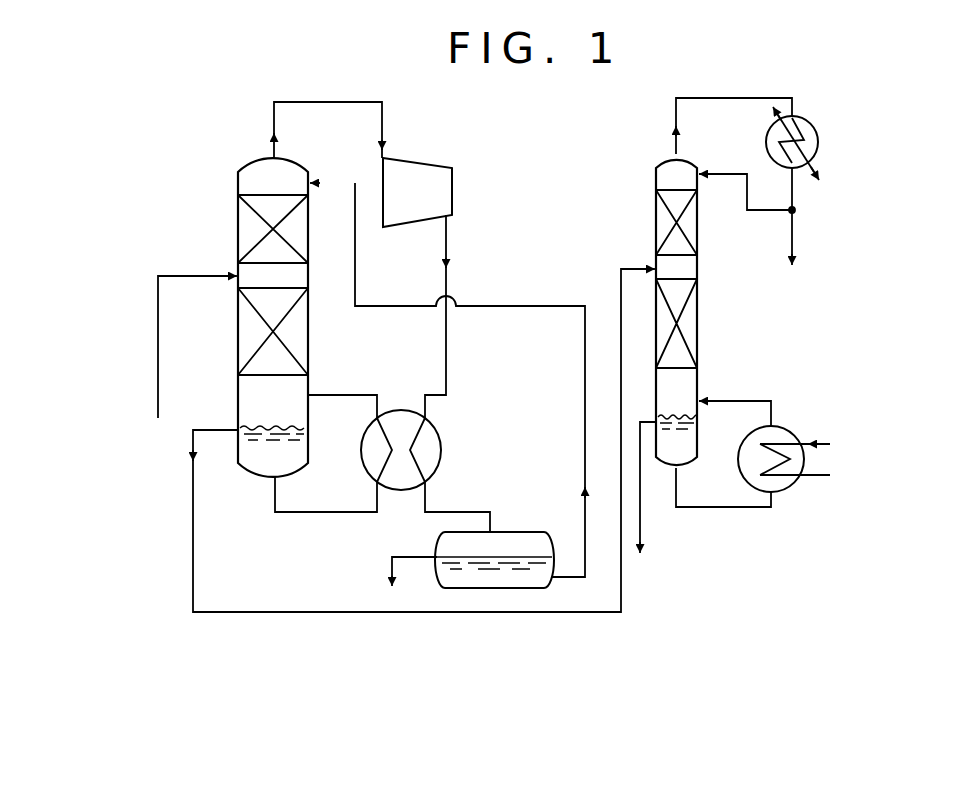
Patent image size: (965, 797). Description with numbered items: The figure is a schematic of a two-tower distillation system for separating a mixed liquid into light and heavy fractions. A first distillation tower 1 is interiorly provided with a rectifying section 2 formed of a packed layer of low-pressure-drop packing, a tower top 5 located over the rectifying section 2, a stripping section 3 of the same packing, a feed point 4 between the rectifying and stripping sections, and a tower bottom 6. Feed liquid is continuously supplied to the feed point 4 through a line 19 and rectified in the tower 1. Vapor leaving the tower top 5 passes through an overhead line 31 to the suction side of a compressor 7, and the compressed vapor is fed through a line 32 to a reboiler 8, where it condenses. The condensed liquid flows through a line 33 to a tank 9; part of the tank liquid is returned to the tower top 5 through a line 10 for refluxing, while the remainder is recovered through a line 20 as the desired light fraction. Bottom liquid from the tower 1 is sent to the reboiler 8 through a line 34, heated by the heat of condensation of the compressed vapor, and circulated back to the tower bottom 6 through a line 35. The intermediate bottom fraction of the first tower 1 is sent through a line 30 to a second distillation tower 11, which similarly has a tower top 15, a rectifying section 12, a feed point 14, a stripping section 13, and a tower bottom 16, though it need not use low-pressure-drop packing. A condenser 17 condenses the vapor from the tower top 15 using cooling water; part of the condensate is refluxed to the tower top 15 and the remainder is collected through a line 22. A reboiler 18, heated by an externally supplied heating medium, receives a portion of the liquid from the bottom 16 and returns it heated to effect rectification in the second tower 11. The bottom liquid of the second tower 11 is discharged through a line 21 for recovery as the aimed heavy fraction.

The first distillation tower 1 is at (221, 208).
The rectifying section 2 is at (243, 228).
The stripping section 3 is at (243, 340).
The feed point 4 is at (240, 283).
The tower top 5 is at (255, 178).
The tower bottom 6 is at (262, 406).
The compressor 7 is at (437, 168).
The reboiler 8 is at (440, 438).
The tank 9 is at (508, 540).
The line 10 is at (527, 306).
The second distillation tower 11 is at (648, 210).
The rectifying section 12 is at (697, 247).
The stripping section 13 is at (697, 360).
The feed point 14 is at (697, 270).
The tower top 15 is at (668, 166).
The tower bottom 16 is at (673, 402).
The condenser 17 is at (818, 142).
The reboiler 18 is at (790, 427).
The line 19 is at (158, 366).
The line 20 is at (392, 557).
The line 21 is at (640, 542).
The line 22 is at (792, 244).
The line 30 is at (193, 585).
The overhead vapor line 31 is at (360, 102).
The line 32 is at (447, 390).
The line 33 is at (463, 512).
The line 34 is at (322, 512).
The line 35 is at (350, 395).